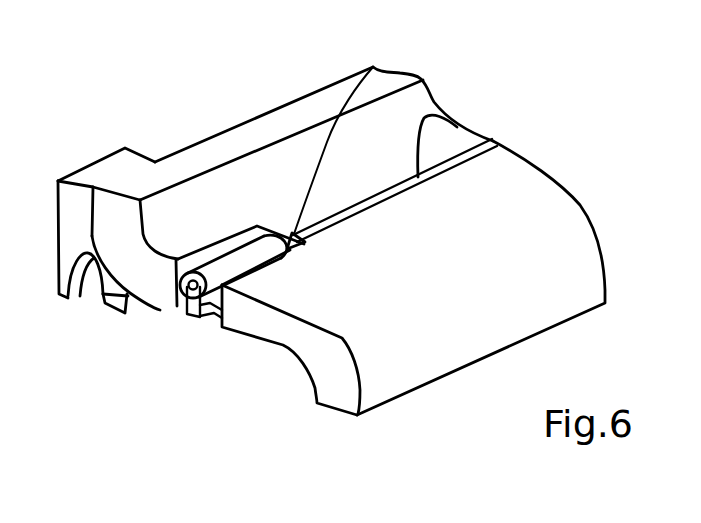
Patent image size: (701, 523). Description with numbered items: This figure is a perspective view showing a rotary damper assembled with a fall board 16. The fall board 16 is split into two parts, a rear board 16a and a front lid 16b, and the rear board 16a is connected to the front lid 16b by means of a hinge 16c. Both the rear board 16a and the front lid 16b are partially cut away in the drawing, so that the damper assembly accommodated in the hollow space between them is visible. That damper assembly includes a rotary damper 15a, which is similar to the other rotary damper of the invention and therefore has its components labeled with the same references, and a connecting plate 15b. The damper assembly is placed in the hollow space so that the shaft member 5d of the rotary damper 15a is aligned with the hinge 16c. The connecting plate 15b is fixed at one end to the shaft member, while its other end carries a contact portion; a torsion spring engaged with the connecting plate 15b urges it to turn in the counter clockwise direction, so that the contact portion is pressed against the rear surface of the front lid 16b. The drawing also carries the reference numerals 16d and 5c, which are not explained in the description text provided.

The fall board 16 is at (300, 60).
The rear board 16a is at (249, 129).
The front lid 16b is at (490, 343).
The hinge 16c is at (453, 123).
The curved end portion 16d is at (373, 67).
The rotary damper 15a is at (229, 241).
The connecting plate 15b is at (192, 316).
The shaft 5c is at (240, 240).
The shaft member 5d is at (180, 288).